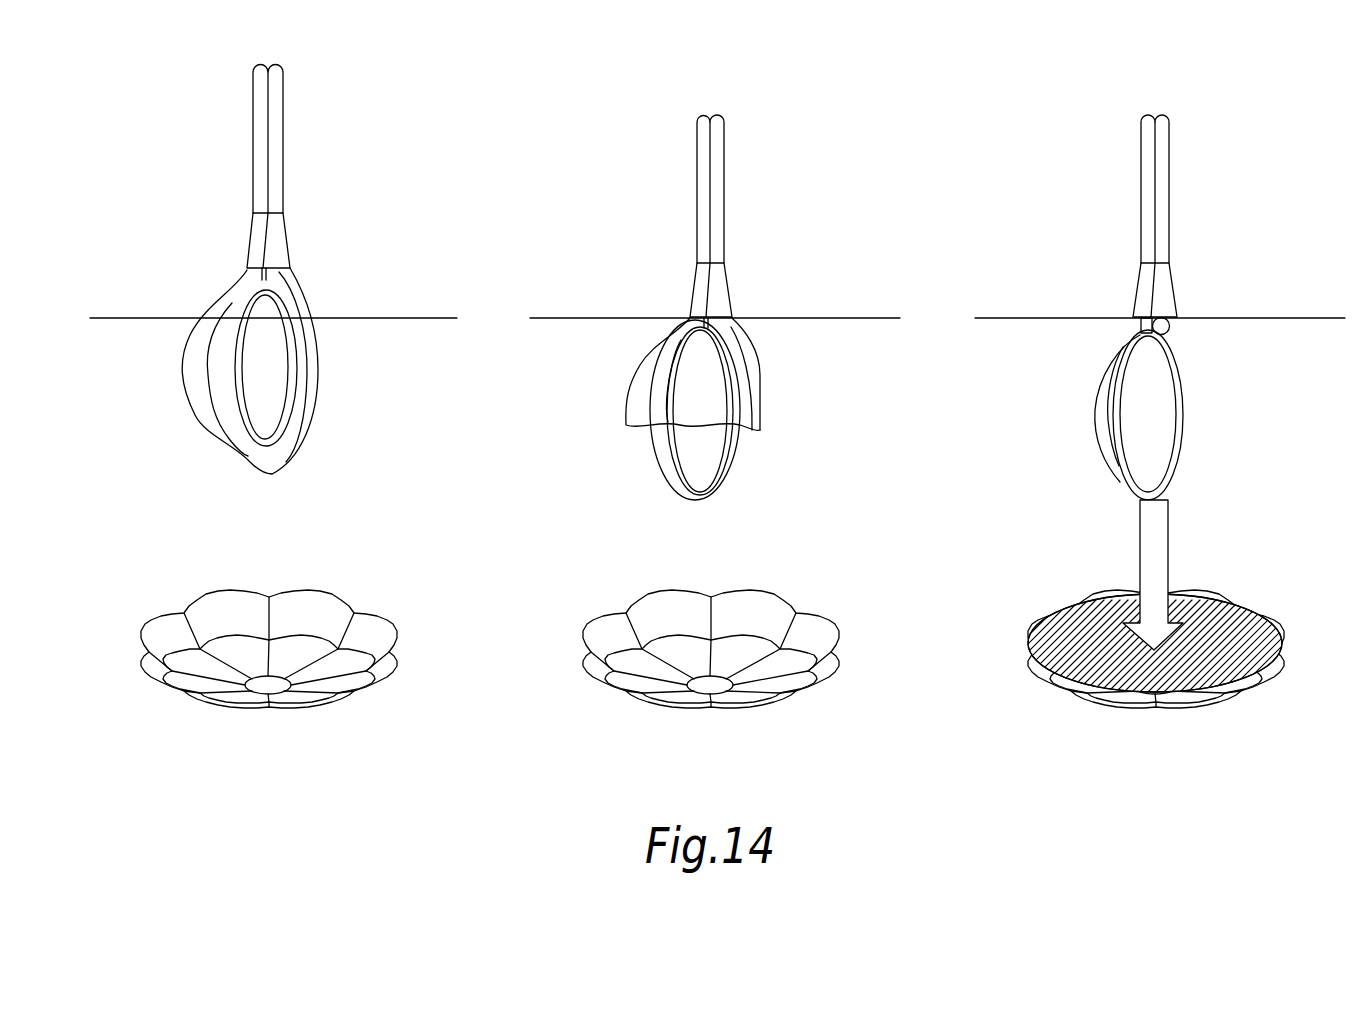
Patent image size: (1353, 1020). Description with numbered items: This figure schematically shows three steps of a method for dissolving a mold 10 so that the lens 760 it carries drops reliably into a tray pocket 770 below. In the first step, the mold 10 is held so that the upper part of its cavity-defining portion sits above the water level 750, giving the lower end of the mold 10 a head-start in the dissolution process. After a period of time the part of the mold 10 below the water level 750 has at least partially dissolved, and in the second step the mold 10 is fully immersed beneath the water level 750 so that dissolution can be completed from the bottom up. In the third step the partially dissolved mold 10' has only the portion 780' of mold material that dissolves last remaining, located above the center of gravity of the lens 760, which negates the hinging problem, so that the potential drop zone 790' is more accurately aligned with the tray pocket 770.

The mold 10 is at (452, 197).
The mold 10' is at (1125, 216).
The water level 750 is at (388, 317).
The lens 760 is at (660, 446).
The tray pocket 770 is at (150, 677).
The portion of the mold material that dissolves last 780' is at (1095, 351).
The potential drop zone 790' is at (1128, 636).